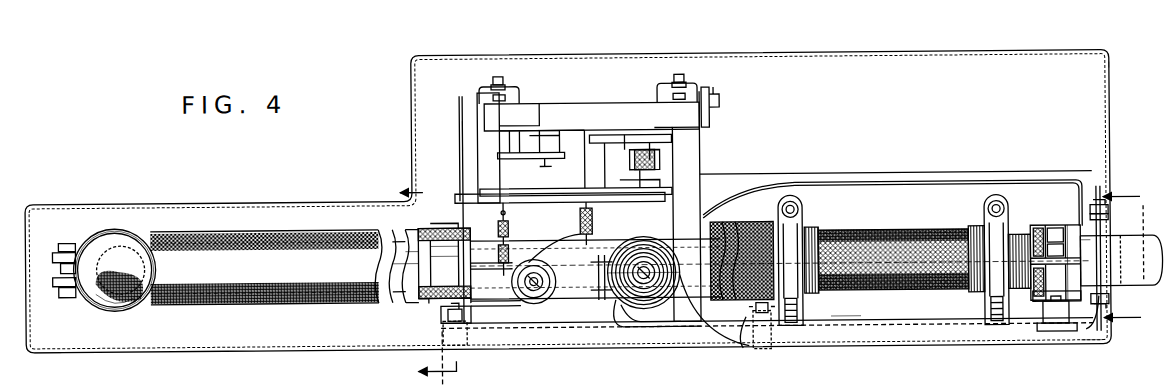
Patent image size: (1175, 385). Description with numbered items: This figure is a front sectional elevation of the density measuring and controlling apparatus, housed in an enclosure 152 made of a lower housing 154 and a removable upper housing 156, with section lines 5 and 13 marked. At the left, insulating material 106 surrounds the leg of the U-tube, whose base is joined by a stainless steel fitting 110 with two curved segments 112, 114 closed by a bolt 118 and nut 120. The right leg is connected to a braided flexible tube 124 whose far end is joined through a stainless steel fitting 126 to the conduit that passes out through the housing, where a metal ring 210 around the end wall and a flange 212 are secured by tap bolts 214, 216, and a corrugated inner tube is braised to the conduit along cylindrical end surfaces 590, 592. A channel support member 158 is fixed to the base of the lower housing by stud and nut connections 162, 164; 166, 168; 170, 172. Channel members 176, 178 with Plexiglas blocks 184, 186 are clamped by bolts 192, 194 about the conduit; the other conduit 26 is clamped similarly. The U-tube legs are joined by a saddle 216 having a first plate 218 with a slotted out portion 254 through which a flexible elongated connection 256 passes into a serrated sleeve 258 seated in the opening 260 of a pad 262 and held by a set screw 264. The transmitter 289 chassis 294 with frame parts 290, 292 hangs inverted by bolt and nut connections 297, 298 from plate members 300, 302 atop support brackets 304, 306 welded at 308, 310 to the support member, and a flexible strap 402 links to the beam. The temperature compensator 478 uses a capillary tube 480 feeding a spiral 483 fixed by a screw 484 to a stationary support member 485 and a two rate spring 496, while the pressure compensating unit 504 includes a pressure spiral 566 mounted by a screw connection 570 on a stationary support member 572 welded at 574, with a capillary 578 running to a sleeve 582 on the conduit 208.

The section line 5- 5 is at (417, 282).
The section line 13- 13 is at (1137, 257).
The conduit 26 is at (1118, 242).
The insulating material 106 is at (397, 250).
The stainless steel fitting 110 is at (87, 310).
The curved segment 112 is at (100, 228).
The curved segment 114 is at (114, 304).
The bolt 118 is at (63, 240).
The nut 120 is at (62, 292).
The braided flexible tube 124 is at (873, 229).
The stainless steel fitting 126 is at (982, 196).
The enclosure 152 is at (1116, 90).
The lower housing 154 is at (1096, 346).
The removable upper housing 156 is at (1114, 64).
The channel support member 158 is at (855, 321).
The stud 162 is at (438, 345).
The nut 164 is at (440, 338).
The stud 166 is at (771, 338).
The nut 168 is at (748, 320).
The stud 170 is at (1064, 330).
The nut 172 is at (1046, 322).
The channel member 176 is at (1034, 305).
The channel member 178 is at (1033, 222).
The Plexiglas block 184 is at (1050, 278).
The Plexiglas block 186 is at (1040, 243).
The bolt 192 is at (1040, 225).
The bolt 194 is at (1060, 222).
The bearing plate 208 is at (1108, 238).
The metal ring 210 is at (1099, 203).
The flange 212 is at (1110, 300).
The tap bolt 214 is at (1104, 226).
The tap bolt / saddle 216 is at (441, 210).
The first plate 218 is at (387, 301).
The slotted out portion 254 is at (436, 255).
The flexible elongated connection 256 is at (442, 242).
The sleeve 258 is at (468, 278).
The opening 260 is at (413, 271).
The pad 262 is at (443, 287).
The set screw 264 is at (463, 346).
The transmitter 289 is at (598, 294).
The frame part 290 is at (482, 94).
The frame part 292 is at (711, 92).
The transmitter instrument chassis 294 is at (602, 100).
The bolt and nut connection 297 is at (505, 80).
The bolt and nut connection 298 is at (673, 83).
The plate member 300 is at (522, 96).
The plate member 302 is at (660, 95).
The support bracket 304 is at (483, 138).
The support bracket 306 is at (696, 146).
The welding material 308 is at (512, 326).
The welding material 310 is at (688, 336).
The flexible strap 402 is at (462, 142).
The temperature compensator 478 is at (538, 316).
The capillary tube 480 is at (743, 190).
The spiral 483 is at (580, 222).
The screw 484 is at (545, 292).
The stationary support member 485 is at (528, 310).
The two rate spring 496 is at (492, 236).
The ice cream pressure compensating unit 504 is at (614, 250).
The pressure spiral 566 is at (662, 250).
The screw connection 570 is at (706, 236).
The stationary support member 572 is at (618, 331).
The weld 574 is at (640, 326).
The capillary 578 is at (664, 328).
The sleeve 582 is at (1121, 245).
The cylindrical end surface 590 is at (1057, 230).
The cylindrical end surface 592 is at (1126, 243).